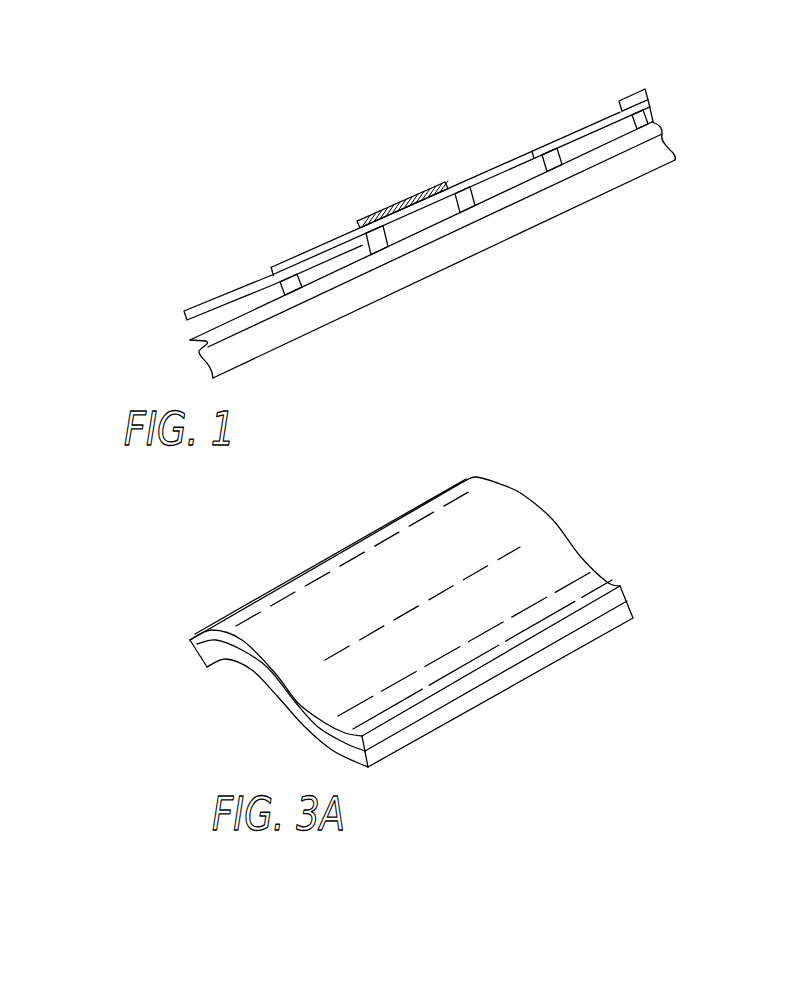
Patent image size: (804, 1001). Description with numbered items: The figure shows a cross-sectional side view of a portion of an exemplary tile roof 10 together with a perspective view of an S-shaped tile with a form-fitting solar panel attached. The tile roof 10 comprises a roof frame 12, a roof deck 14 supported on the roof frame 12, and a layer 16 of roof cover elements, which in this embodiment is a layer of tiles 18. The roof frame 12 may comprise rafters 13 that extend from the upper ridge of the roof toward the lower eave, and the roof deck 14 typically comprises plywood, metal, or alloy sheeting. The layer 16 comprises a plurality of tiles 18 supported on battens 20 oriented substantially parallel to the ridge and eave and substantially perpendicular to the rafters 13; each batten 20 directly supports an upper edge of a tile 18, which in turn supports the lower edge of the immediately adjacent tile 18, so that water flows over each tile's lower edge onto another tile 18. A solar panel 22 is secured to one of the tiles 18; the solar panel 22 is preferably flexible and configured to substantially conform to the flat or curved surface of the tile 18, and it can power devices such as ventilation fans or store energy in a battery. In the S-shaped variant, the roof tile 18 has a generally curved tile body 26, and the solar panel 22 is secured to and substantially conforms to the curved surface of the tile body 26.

In FIG. 1, the tile roof 10 is at (253, 183).
In FIG. 1, the roof frame 12 is at (618, 191).
In FIG. 1, the rafters 13 is at (390, 293).
In FIG. 1, the roof deck 14 is at (533, 188).
In FIG. 1, the layer of roof cover elements 16 is at (566, 131).
In FIG. 1, the tile 18 is at (483, 165).
In FIG. 3A, the tile 18 is at (482, 592).
In FIG. 1, the batten 20 is at (288, 294).
In FIG. 1, the solar panel 22 is at (393, 206).
In FIG. 3A, the solar panel 22 is at (506, 518).
In FIG. 3A, the curved tile body 26 is at (454, 721).